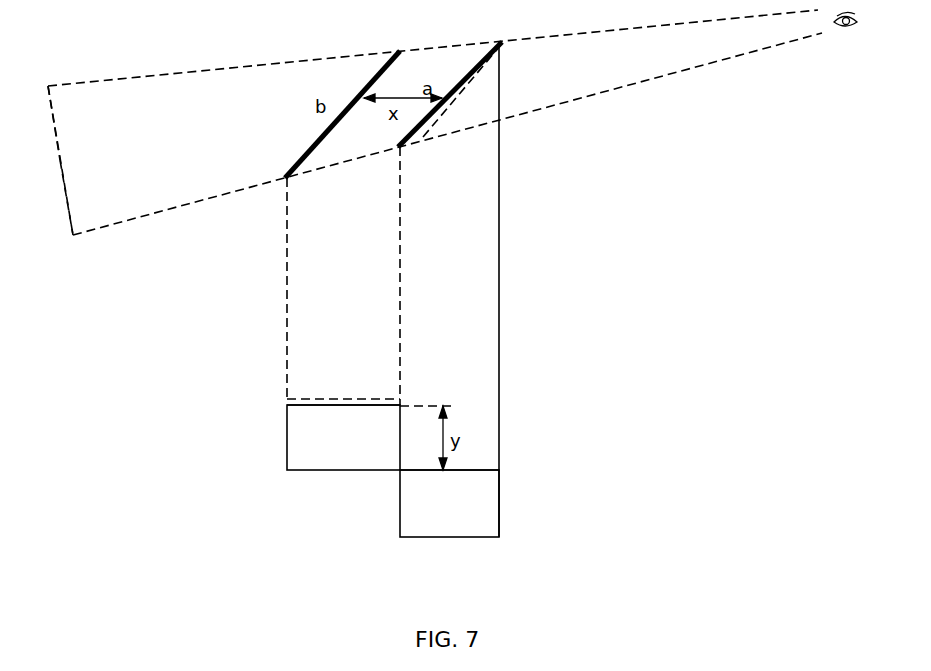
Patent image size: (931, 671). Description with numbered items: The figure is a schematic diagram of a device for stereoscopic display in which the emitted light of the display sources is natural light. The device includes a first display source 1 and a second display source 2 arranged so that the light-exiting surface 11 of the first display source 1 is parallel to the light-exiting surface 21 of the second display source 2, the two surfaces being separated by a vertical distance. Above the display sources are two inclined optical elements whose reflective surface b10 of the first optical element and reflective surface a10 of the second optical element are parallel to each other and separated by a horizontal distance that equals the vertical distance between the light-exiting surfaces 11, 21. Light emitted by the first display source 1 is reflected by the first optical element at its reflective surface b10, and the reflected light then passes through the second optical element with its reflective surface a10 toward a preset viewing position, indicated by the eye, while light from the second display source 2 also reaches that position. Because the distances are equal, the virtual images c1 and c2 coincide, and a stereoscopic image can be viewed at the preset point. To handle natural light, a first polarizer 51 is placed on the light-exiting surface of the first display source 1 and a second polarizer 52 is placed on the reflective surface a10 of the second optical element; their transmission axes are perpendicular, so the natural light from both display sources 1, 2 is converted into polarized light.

The first display source 1 is at (343, 437).
The second display source 2 is at (449, 503).
The light-exiting surface of the first display source 11 is at (305, 406).
The light-exiting surface of the second display source 21 is at (487, 470).
The first polarizer 51 is at (332, 400).
The second polarizer 52 is at (482, 73).
The reflective surface of the second optical element a10 is at (415, 143).
The reflective surface of the first optical element b10 is at (320, 163).
The virtual image c1 is at (68, 123).
The virtual image c2 is at (77, 197).